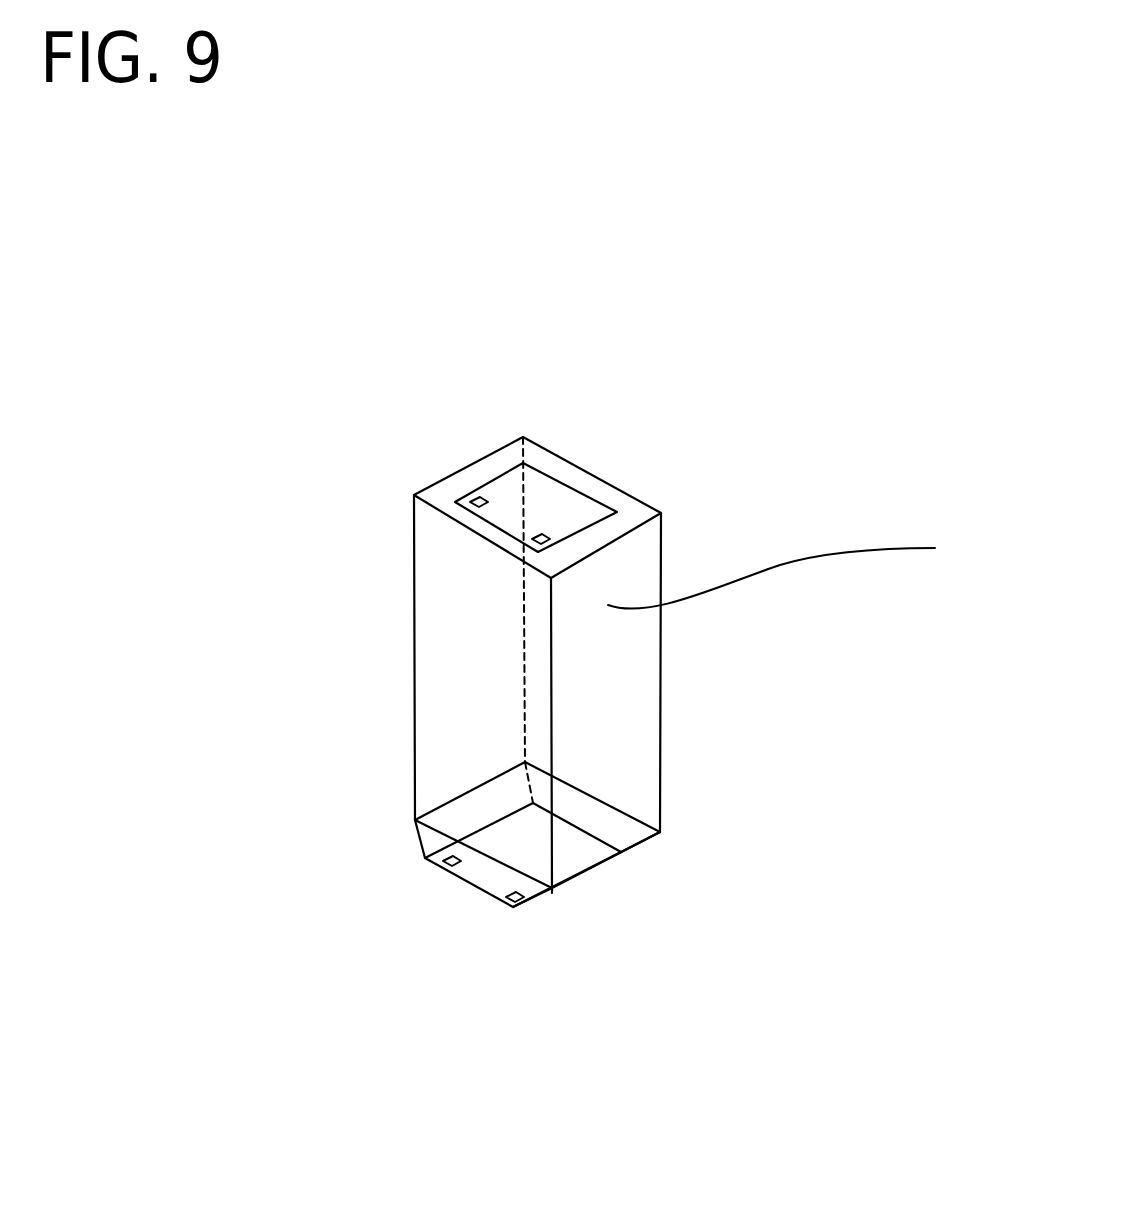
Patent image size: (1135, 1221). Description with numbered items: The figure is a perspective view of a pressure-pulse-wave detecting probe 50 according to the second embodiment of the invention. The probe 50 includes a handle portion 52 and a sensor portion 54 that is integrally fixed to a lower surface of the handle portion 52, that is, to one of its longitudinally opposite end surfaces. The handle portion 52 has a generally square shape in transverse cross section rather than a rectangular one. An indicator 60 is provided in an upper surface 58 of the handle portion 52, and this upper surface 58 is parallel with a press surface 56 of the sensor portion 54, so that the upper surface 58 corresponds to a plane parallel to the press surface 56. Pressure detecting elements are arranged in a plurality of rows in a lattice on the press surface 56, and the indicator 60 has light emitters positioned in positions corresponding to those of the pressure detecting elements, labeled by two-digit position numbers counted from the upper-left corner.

The pressure-pulse-wave detecting probe 50 is at (556, 300).
The handle portion 52 is at (716, 509).
The sensor portion 54 is at (546, 936).
The press surface 56 is at (478, 882).
The upper surface 58 is at (630, 503).
The indicator 60 is at (508, 483).